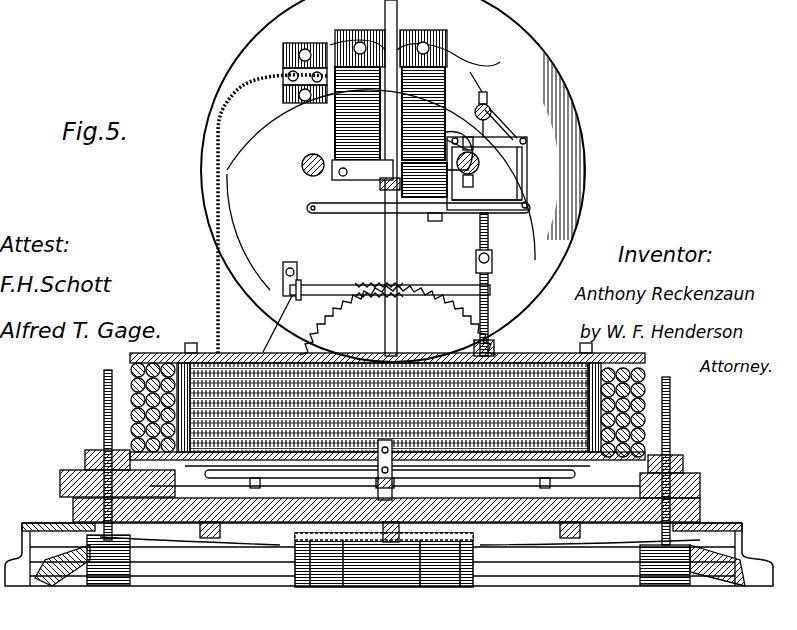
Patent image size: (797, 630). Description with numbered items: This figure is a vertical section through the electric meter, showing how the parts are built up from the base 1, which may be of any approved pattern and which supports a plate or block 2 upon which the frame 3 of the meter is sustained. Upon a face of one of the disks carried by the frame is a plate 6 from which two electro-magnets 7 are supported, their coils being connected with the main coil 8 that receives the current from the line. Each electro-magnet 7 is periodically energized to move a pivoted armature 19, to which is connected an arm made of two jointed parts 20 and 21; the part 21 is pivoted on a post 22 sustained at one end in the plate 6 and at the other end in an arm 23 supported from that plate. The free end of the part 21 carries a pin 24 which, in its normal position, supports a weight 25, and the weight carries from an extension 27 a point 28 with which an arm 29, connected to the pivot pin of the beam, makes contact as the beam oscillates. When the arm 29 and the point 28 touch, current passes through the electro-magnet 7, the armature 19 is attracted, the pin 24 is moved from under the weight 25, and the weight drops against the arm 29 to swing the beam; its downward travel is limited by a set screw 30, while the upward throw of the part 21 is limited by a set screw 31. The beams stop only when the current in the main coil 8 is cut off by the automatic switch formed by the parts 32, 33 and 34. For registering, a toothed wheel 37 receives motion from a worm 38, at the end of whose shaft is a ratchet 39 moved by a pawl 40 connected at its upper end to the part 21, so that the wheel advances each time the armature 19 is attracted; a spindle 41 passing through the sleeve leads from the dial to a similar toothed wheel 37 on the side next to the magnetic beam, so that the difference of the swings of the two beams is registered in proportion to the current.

The base 1 is at (100, 440).
The plate or block 2 is at (676, 466).
The frame 3 is at (371, 367).
The plate 6 is at (393, 181).
The electro-magnet 7 is at (345, 34).
The main coil 8 is at (277, 324).
The armature 19 is at (440, 213).
The arm part 20 is at (527, 178).
The arm part 21 is at (518, 140).
The post 22 is at (510, 160).
The arm 23 is at (505, 110).
The pin 24 is at (462, 128).
The weight 25 is at (477, 69).
The extension 27 is at (475, 112).
The point 28 is at (462, 178).
The arm 29 is at (432, 221).
The set screw 30 is at (487, 173).
The set screw 31 is at (485, 92).
The automatic switch 32 is at (330, 470).
The automatic switch 33 is at (380, 456).
The automatic switch 34 is at (372, 472).
The toothed wheel 37 is at (428, 325).
The worm 38 is at (430, 272).
The ratchet 39 is at (478, 318).
The pawl 40 is at (490, 240).
The spindle 41 is at (557, 159).